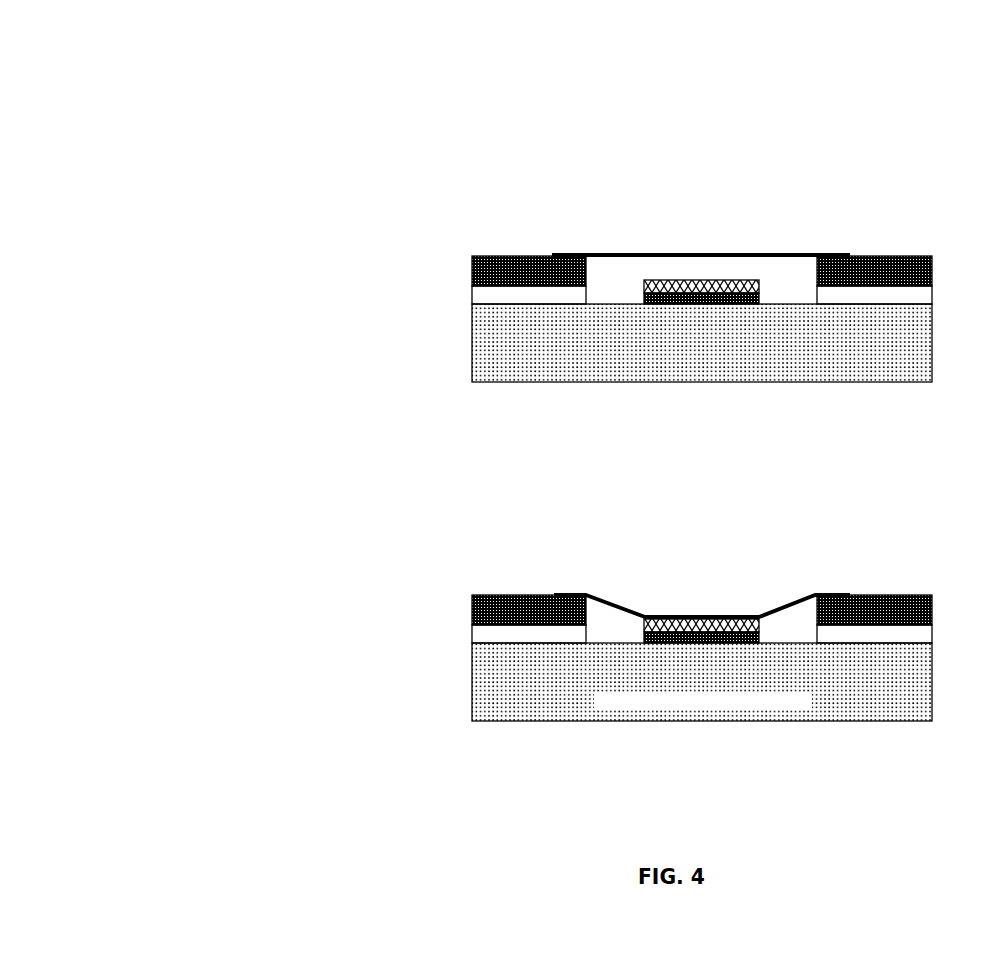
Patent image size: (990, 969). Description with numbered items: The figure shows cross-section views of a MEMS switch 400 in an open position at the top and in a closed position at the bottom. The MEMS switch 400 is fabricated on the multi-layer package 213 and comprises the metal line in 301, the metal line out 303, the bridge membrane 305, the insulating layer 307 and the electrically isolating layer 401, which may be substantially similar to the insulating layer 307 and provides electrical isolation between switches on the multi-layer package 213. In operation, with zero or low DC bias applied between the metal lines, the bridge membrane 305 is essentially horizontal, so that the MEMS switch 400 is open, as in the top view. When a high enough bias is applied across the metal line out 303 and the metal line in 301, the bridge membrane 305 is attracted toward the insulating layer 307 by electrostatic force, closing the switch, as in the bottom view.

The MEMS switch 400 is at (277, 128).
The metal line in 301 is at (510, 595).
The bridge membrane 305 is at (622, 607).
The insulating layer 307 is at (640, 624).
The metal line out 303 is at (762, 633).
The electrically isolating layer 401 is at (472, 632).
The multi-layer package 213 is at (807, 709).